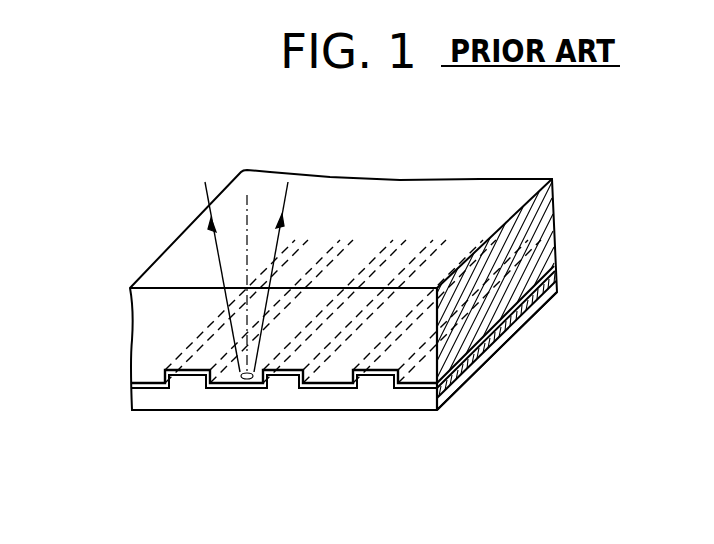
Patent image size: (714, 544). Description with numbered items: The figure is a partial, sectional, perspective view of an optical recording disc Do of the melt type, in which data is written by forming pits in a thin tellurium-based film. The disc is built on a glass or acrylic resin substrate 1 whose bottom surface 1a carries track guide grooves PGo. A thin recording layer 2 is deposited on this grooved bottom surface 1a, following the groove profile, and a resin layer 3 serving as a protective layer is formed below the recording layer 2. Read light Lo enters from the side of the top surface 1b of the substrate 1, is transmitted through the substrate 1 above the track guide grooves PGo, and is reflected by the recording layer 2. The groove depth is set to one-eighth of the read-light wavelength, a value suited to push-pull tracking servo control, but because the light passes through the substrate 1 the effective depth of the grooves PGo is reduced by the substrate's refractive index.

The substrate 1 is at (131, 345).
The bottom surface of the substrate 1a is at (141, 389).
The top surface of the substrate 1b is at (160, 268).
The recording layer 2 is at (418, 392).
The resin layer 3 is at (253, 398).
The optical recording disc Do is at (530, 158).
The read light Lo is at (300, 204).
The track guide grooves PGo is at (331, 379).